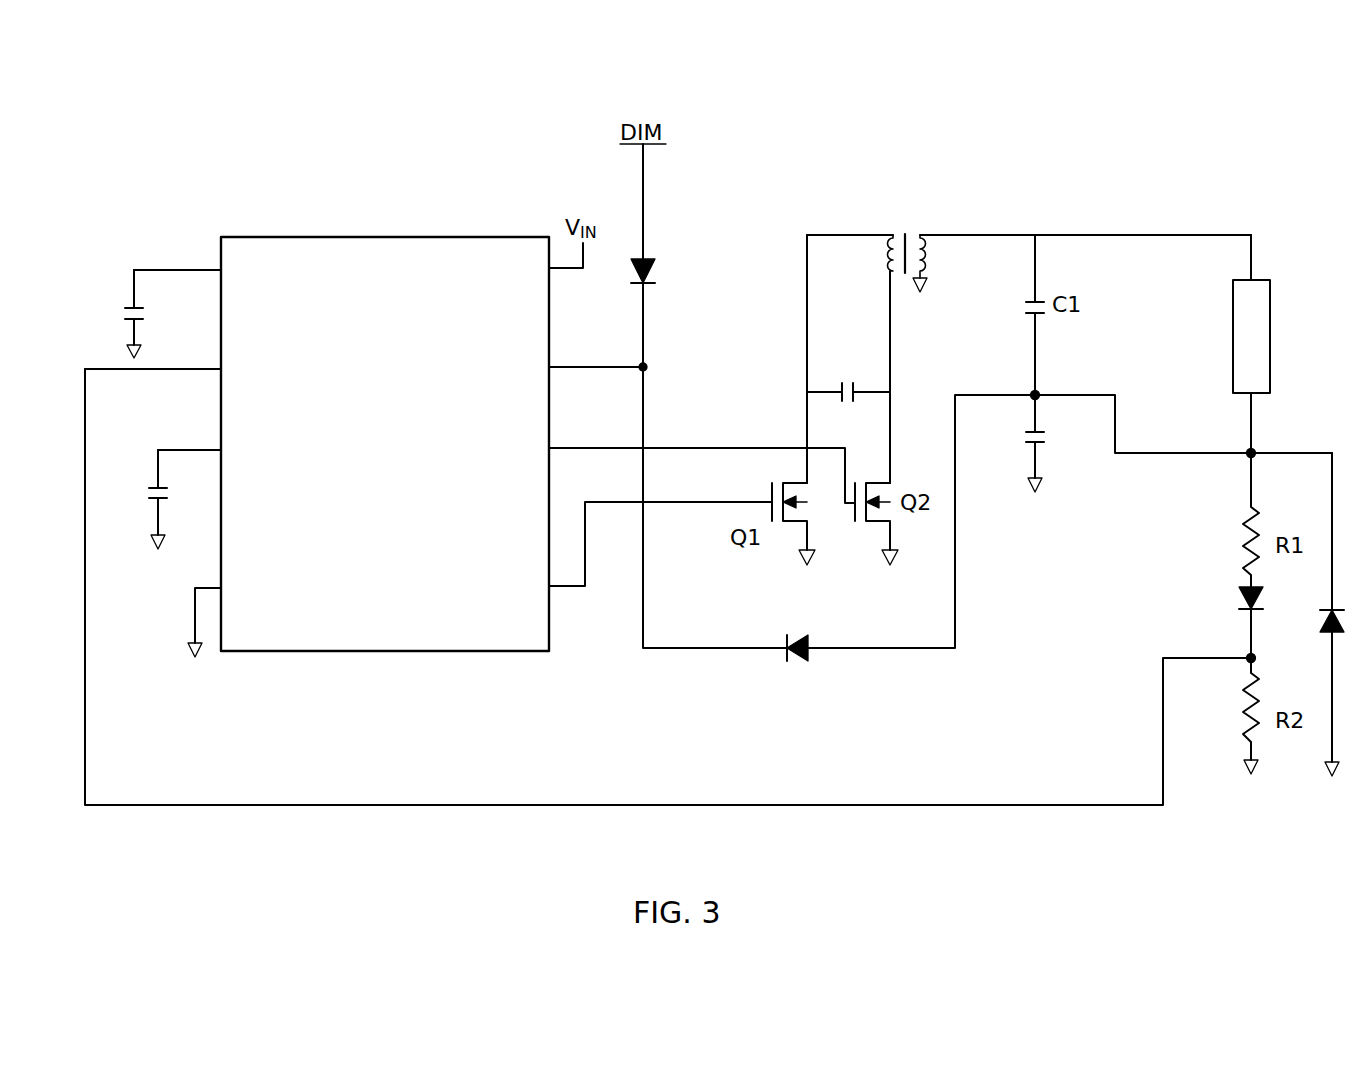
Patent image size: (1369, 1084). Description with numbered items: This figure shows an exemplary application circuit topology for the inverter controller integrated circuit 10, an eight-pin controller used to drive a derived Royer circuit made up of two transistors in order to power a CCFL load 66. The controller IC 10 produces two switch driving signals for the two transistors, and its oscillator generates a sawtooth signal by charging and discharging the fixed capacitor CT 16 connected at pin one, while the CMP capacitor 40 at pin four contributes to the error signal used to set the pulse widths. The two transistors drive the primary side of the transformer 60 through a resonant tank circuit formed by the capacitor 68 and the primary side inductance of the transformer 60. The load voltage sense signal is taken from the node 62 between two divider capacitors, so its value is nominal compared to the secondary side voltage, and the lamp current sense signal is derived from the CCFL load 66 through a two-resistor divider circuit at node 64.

The inverter controller integrated circuit 10 is at (309, 237).
The capacitor CT 16 is at (134, 308).
The CMP capacitor 40 is at (158, 488).
The transformer 60 is at (896, 231).
The node 62 is at (1035, 395).
The node 64 is at (1251, 658).
The CCFL load 66 is at (1258, 337).
The capacitor 68 is at (825, 392).